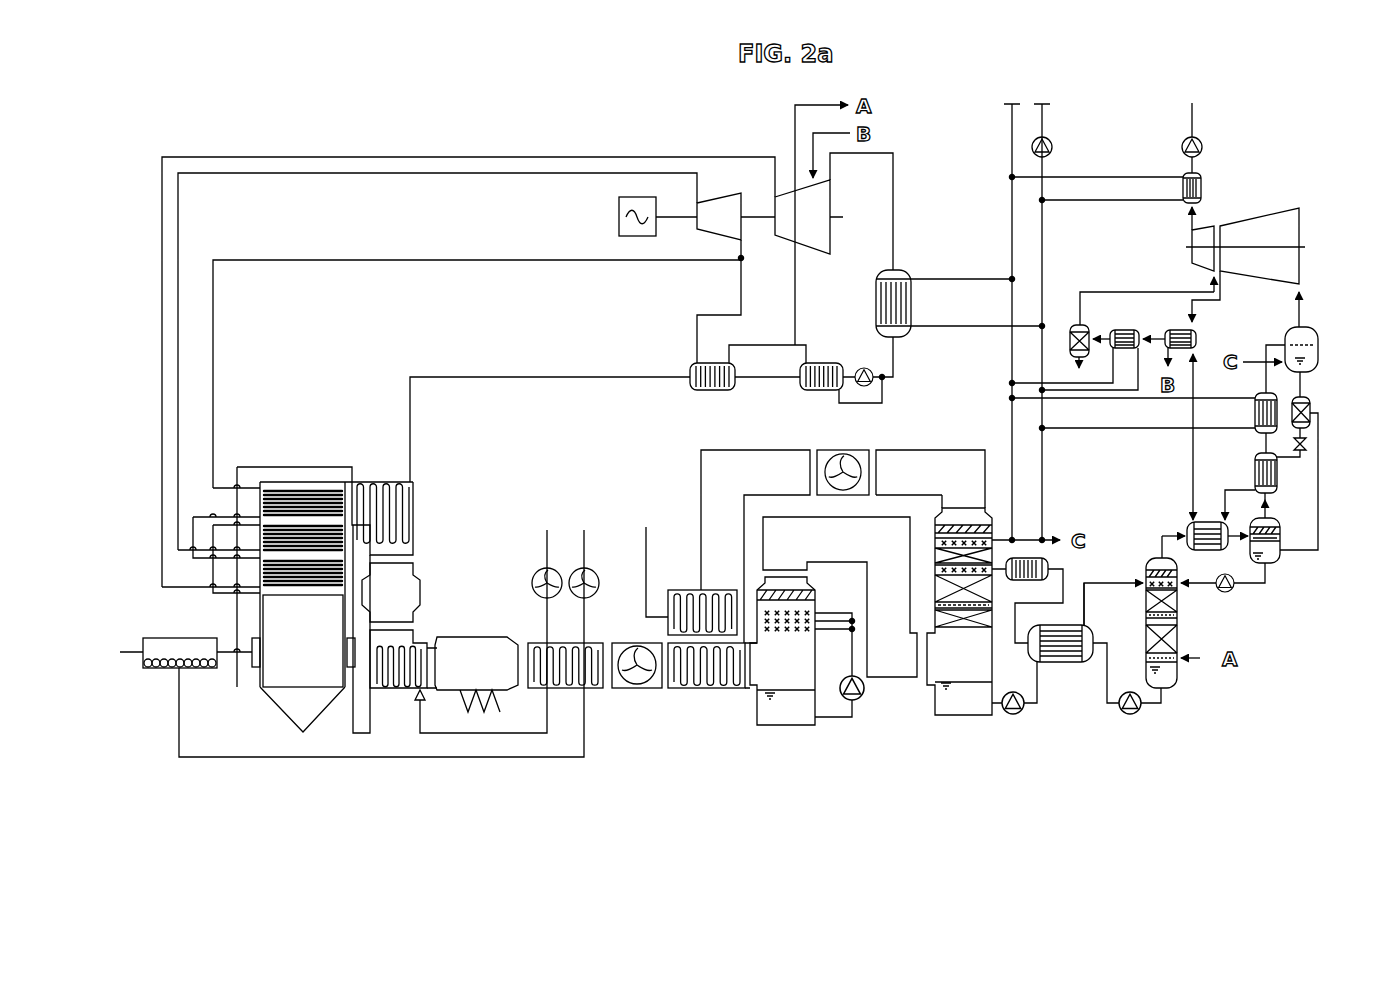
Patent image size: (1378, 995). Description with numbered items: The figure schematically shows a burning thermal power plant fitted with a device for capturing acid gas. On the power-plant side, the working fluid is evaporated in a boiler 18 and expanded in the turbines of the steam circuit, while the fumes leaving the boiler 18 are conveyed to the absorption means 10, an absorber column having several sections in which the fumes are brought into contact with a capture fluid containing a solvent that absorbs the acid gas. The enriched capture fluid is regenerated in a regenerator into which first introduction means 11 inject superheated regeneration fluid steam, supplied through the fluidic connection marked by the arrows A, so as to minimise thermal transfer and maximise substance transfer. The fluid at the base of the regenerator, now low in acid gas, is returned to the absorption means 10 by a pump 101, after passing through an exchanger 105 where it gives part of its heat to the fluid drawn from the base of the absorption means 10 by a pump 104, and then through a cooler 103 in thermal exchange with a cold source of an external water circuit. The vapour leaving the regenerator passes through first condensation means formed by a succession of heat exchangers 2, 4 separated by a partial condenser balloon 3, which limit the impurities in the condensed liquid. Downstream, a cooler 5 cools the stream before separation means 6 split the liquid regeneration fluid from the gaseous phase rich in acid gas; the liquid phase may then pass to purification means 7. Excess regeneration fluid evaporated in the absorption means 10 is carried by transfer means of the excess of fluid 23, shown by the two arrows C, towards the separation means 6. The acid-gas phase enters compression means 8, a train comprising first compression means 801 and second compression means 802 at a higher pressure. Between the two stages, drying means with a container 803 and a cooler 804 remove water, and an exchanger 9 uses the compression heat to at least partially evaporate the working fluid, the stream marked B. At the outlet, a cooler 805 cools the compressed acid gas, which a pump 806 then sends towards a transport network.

The heat exchanger 2 is at (1203, 520).
The partial condenser balloon 3 is at (1283, 522).
The heat exchanger 4 is at (1250, 466).
The cooler 5 is at (1250, 418).
The separation means 6 is at (1283, 332).
The purification means 7 is at (1312, 405).
The compression means 8 is at (1306, 226).
The exchanger 9 is at (1201, 339).
The absorption means 10 is at (931, 692).
The first introduction means 11 is at (1207, 656).
The boiler 18 is at (274, 716).
The transfer means of the excess of fluid 23 is at (1050, 537).
The pump 101 is at (1130, 718).
The cooler 103 is at (1052, 560).
The pump 104 is at (1013, 718).
The exchanger 105 is at (1062, 666).
The first compression means 801 is at (1267, 210).
The second compression means 802 is at (1207, 226).
The container 803 is at (1066, 340).
The cooler 804 is at (1120, 327).
The cooler 805 is at (1207, 186).
The pump 806 is at (1208, 147).